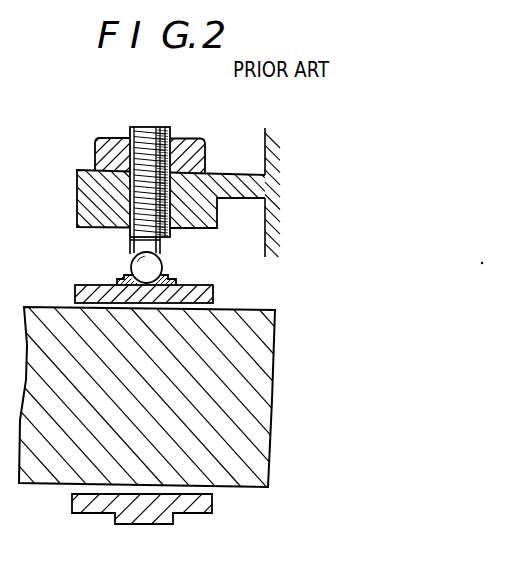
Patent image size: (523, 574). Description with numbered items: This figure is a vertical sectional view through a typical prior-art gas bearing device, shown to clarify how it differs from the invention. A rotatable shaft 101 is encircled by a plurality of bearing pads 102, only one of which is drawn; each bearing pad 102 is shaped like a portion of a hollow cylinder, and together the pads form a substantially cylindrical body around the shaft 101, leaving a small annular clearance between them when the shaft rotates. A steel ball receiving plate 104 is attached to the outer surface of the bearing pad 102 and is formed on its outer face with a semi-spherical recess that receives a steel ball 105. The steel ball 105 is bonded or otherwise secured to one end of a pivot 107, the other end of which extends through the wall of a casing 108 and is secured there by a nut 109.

The rotatable shaft 101 is at (241, 472).
The bearing pad 102 is at (73, 292).
The steel ball receiving plate 104 is at (165, 272).
The steel ball 105 is at (138, 260).
The pivot 107 is at (155, 127).
The casing 108 is at (78, 178).
The nut 109 is at (106, 141).